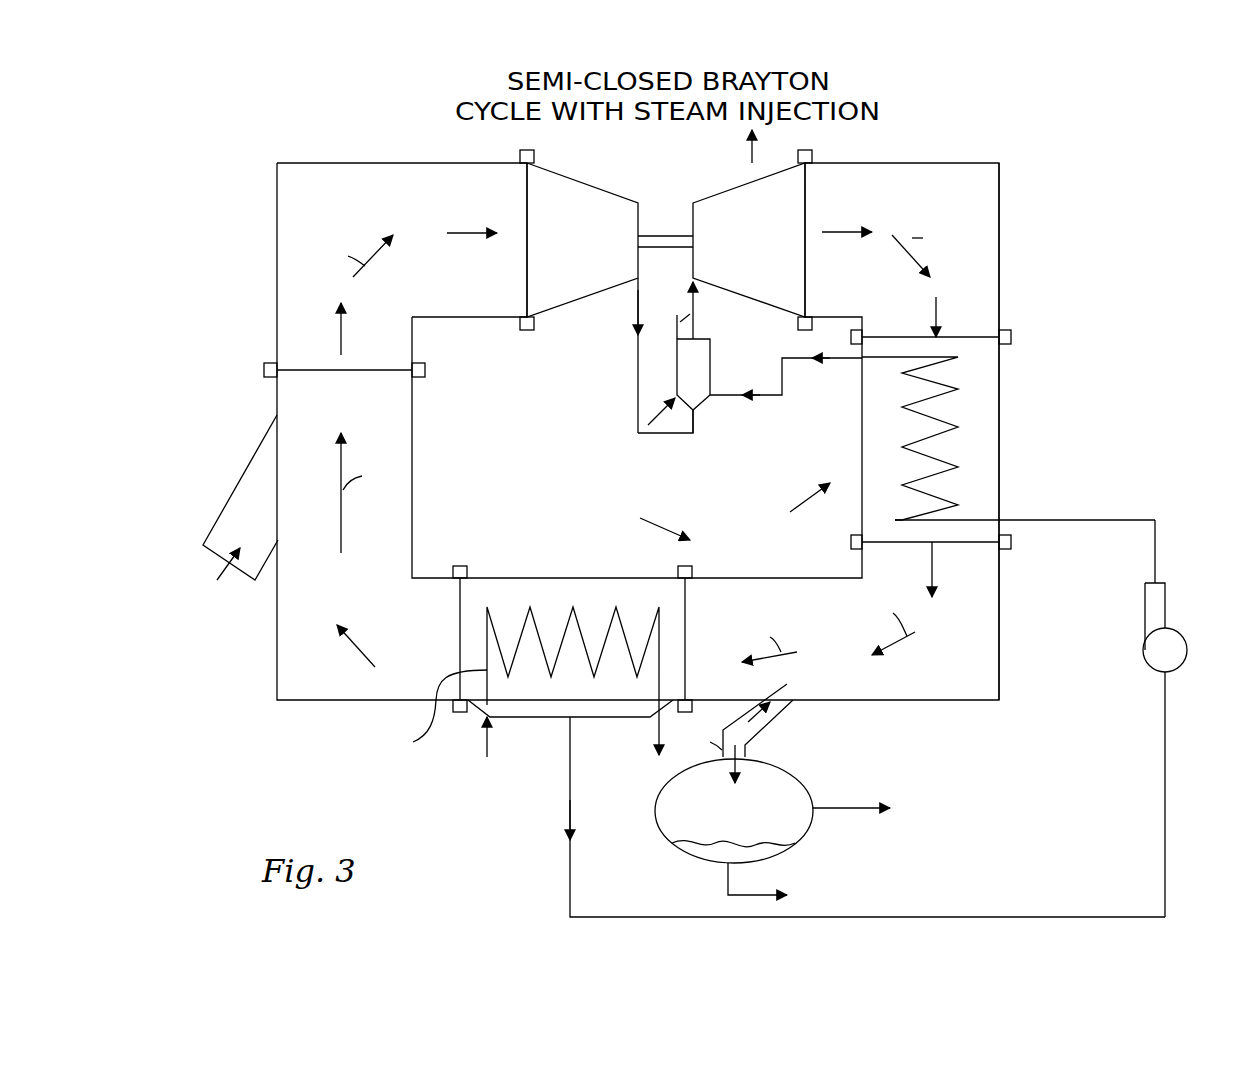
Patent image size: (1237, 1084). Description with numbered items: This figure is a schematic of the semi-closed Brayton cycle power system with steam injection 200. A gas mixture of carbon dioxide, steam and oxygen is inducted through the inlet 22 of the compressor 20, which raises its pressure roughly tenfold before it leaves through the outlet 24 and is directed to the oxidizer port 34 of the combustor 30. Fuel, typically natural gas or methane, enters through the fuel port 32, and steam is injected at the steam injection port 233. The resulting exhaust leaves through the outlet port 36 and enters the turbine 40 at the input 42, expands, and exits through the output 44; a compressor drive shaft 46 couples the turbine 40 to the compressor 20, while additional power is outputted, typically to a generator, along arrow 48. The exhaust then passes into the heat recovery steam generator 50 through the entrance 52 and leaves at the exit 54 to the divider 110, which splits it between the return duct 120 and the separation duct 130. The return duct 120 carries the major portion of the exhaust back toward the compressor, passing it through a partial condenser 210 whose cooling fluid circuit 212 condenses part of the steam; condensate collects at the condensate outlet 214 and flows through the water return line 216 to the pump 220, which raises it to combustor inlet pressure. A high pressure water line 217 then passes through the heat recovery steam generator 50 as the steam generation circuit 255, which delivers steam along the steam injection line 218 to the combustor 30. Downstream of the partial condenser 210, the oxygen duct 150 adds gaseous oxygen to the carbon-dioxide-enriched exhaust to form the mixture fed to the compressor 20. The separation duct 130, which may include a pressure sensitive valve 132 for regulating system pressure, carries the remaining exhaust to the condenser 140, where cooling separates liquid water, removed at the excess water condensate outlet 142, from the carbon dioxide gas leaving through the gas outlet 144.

The compressor 20 is at (605, 180).
The inlet 22 is at (520, 190).
The outlet 24 is at (632, 298).
The combustor 30 is at (733, 433).
The fuel port 32 is at (660, 434).
The oxidizer port 34 is at (696, 416).
The outlet port 36 is at (698, 335).
The turbine 40 is at (703, 178).
The input 42 is at (690, 300).
The output 44 is at (806, 190).
The compressor drive shaft 46 is at (677, 208).
The power output arrow 48 is at (748, 162).
The heat recovery steam generator 50 is at (790, 512).
The entrance 52 is at (975, 337).
The exit 54 is at (990, 548).
The divider 110 is at (640, 518).
The return duct 120 is at (325, 700).
The separation duct 130 is at (775, 722).
The pressure sensitive valve 132 is at (737, 723).
The condenser 140 is at (655, 778).
The excess water condensate outlet 142 is at (842, 810).
The gas outlet 144 is at (727, 884).
The oxygen duct 150 is at (246, 472).
The steam injection power system 200 is at (1120, 233).
The partial condenser 210 is at (590, 578).
The cooling fluid circuit 212 is at (432, 712).
The condensate outlet 214 is at (568, 744).
The water return line 216 is at (569, 906).
The high pressure water line 217 is at (1088, 520).
The steam injection line 218 is at (830, 337).
The pump 220 is at (1176, 626).
The steam injection port 233 is at (712, 390).
The steam generation circuit 255 is at (948, 380).